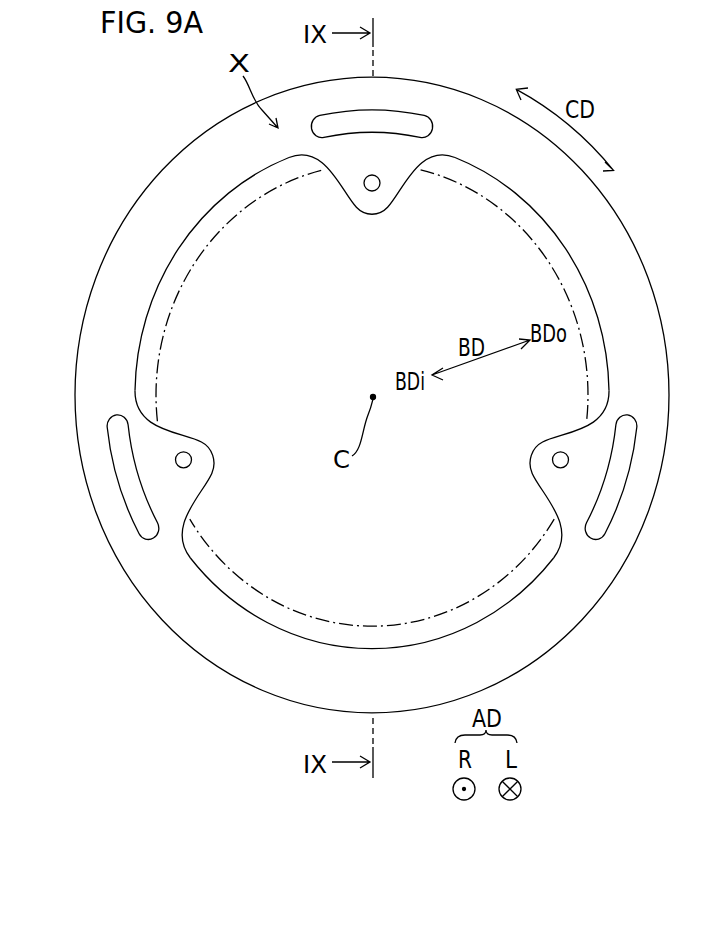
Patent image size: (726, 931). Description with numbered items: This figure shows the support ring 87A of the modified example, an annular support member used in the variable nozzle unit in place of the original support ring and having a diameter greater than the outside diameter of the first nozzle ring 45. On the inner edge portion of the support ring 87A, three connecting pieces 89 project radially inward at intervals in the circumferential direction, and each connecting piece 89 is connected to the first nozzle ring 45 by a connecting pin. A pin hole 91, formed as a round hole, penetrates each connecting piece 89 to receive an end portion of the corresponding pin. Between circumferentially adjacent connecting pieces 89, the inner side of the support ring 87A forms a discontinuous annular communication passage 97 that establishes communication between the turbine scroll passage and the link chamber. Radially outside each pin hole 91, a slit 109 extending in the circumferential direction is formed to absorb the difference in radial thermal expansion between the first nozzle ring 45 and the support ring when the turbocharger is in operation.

The support ring 87A is at (452, 65).
The communication passage 97 is at (236, 204).
The connecting piece 89 is at (364, 215).
The first nozzle ring 45 is at (178, 290).
The pin hole 91 is at (380, 187).
The slit 109 is at (388, 120).